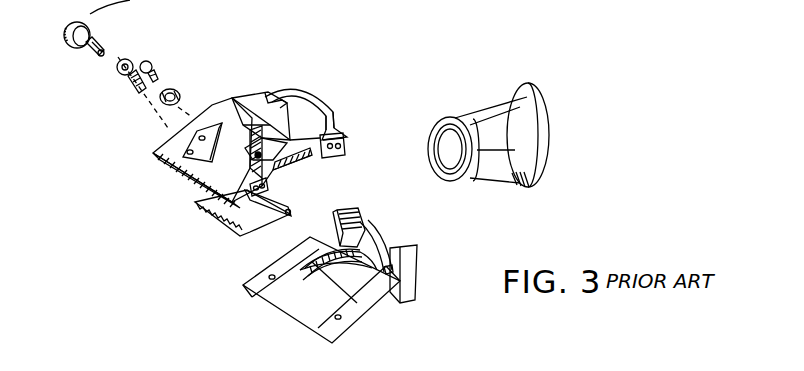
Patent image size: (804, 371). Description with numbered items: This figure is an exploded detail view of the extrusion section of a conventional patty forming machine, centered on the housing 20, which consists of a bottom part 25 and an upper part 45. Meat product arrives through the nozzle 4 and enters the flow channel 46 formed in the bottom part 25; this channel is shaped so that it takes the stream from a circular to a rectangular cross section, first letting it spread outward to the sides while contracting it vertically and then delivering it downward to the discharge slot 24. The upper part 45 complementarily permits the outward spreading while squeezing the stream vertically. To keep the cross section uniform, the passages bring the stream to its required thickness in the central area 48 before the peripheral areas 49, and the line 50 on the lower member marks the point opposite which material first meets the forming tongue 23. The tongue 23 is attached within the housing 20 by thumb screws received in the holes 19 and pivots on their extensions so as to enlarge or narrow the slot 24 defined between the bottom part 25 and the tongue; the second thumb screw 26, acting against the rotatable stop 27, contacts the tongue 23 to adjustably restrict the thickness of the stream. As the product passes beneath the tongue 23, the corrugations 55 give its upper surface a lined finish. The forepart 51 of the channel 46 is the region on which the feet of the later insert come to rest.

The nozzle 4 is at (487, 128).
The holes 19 is at (310, 140).
The housing 20 is at (223, 66).
The forming tongue 23 is at (242, 236).
The slot 24 is at (300, 304).
The bottom part 25 is at (313, 248).
The second thumb screw 26 is at (112, 75).
The rotatable stop 27 is at (178, 90).
The upper part 45 is at (258, 120).
The flow channel 46 is at (343, 277).
The central area 48 is at (362, 258).
The peripheral areas 49 is at (325, 248).
The line 50 is at (318, 292).
The forepart of the channel 51 is at (290, 303).
The corrugations 55 is at (208, 220).